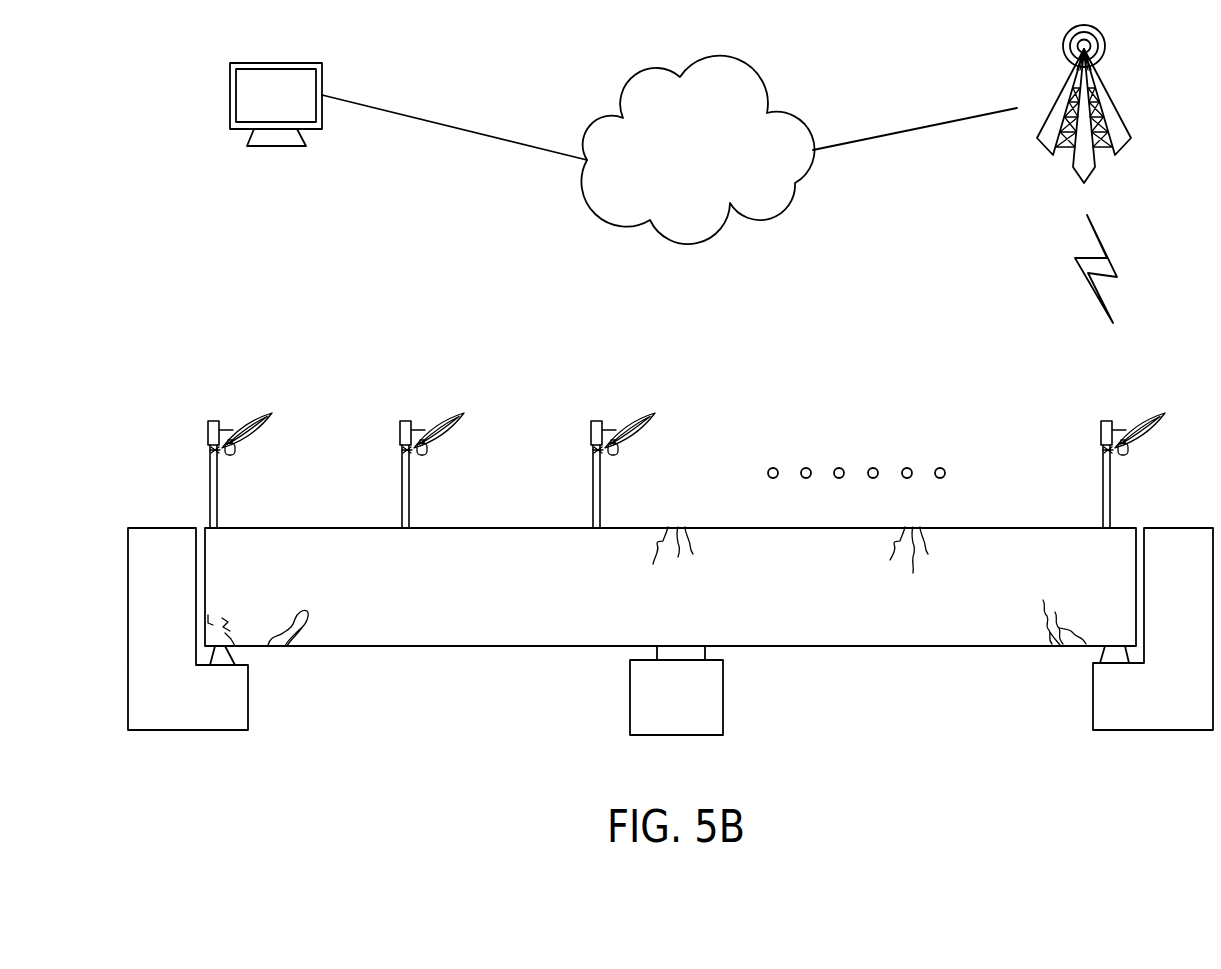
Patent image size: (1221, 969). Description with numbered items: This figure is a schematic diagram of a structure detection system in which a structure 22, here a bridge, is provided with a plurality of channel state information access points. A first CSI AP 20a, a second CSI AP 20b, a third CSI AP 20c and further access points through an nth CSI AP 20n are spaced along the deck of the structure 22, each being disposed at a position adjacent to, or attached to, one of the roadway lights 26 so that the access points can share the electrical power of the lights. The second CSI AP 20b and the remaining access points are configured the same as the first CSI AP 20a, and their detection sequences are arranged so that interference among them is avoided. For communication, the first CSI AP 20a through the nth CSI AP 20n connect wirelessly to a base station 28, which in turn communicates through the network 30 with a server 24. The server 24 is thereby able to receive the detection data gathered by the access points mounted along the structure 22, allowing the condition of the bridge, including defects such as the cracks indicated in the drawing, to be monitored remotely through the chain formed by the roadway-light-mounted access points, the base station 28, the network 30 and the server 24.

The first CSI AP 20a is at (218, 450).
The second CSI AP 20b is at (410, 450).
The third CSI AP 20c is at (601, 450).
The nth CSI AP 20n is at (1111, 450).
The structure 22 is at (420, 638).
The server 24 is at (275, 146).
The roadway lights 26 is at (215, 420).
The base station 28 is at (1113, 105).
The network 30 is at (685, 247).